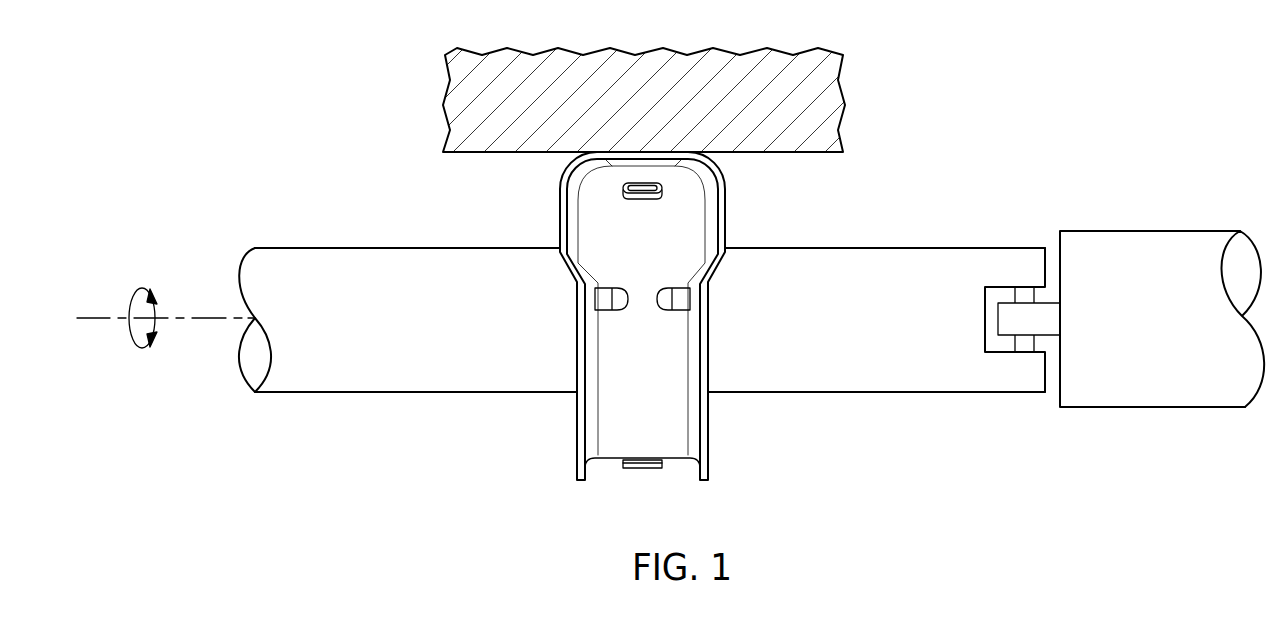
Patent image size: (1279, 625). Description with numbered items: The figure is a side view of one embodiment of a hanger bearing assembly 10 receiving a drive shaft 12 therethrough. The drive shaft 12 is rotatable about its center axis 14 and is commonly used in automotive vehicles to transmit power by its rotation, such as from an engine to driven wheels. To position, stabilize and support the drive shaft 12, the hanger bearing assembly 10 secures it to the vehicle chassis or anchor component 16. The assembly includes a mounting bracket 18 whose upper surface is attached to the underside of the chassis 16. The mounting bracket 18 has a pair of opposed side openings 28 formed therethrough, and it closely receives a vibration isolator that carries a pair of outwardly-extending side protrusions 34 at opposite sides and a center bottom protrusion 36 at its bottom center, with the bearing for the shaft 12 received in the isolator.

The hanger bearing assembly 10 is at (553, 458).
The drive shaft 12 is at (343, 392).
The center axis 14 is at (97, 318).
The vehicle chassis/anchor component 16 is at (710, 77).
The mounting bracket 18 is at (678, 435).
The side openings 28 is at (642, 200).
The side protrusions 34 is at (644, 182).
The center bottom protrusion 36 is at (643, 470).